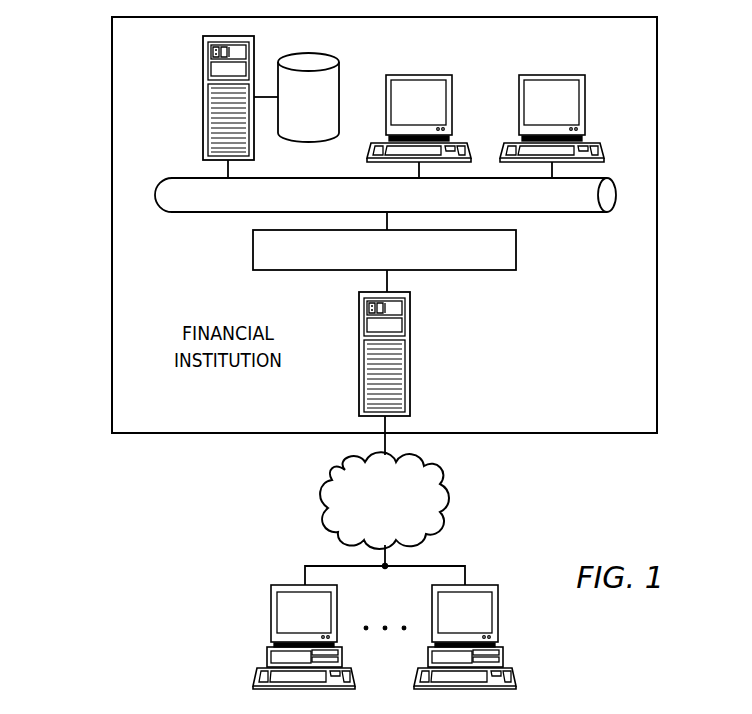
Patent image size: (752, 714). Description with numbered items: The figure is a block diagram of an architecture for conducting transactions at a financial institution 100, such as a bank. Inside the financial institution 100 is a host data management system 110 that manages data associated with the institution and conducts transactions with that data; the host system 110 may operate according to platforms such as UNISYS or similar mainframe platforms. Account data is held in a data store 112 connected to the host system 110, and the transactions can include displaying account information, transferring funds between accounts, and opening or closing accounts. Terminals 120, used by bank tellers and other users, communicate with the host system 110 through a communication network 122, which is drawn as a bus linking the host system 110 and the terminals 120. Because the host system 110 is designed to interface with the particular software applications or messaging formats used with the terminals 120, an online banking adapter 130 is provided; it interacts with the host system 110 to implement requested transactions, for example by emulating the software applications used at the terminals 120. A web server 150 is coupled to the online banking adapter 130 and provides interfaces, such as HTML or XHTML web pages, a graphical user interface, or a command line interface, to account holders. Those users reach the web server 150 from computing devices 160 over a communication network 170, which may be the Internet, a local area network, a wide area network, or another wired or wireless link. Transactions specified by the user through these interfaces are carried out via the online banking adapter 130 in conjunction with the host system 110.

The financial institution 100 is at (112, 147).
The host data management system 110 is at (203, 88).
The data store 112 is at (290, 113).
The terminals 120 is at (425, 75).
The communication network 122 is at (556, 213).
The online banking adapter 130 is at (253, 252).
The web server 150 is at (410, 352).
The computing devices 160 is at (271, 614).
The communication network 170 is at (366, 510).